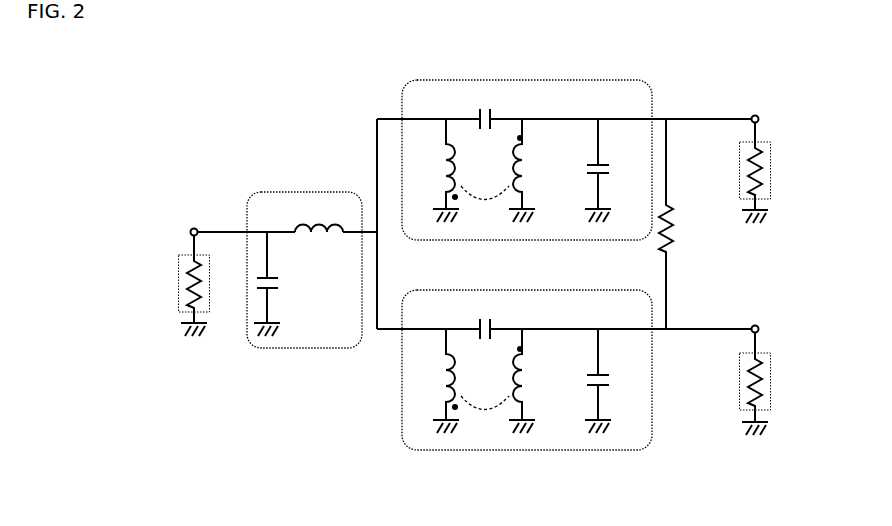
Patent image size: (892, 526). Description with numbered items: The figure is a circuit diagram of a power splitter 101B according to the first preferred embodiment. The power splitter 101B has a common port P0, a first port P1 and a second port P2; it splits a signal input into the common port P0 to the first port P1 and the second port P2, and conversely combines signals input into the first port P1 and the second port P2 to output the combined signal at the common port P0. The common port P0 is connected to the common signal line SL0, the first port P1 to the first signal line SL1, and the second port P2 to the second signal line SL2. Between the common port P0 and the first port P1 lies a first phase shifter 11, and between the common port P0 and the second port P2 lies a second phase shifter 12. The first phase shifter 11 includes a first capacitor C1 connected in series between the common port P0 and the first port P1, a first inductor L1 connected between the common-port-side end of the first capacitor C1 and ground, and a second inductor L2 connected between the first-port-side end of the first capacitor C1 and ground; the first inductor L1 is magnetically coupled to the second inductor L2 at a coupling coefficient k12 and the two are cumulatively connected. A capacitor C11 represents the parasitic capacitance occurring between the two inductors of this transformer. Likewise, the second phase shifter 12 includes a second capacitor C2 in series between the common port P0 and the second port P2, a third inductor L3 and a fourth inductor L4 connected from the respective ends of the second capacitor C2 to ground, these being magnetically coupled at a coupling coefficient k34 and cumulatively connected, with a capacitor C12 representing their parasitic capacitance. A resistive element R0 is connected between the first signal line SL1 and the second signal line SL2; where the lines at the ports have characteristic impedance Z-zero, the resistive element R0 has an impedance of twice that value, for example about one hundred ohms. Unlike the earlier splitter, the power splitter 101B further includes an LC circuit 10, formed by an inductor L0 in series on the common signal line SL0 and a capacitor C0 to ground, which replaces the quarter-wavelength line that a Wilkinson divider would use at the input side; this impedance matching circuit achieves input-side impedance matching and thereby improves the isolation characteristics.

The power splitter 101B is at (293, 50).
The LC circuit 10 is at (304, 246).
The first phase shifter 11 is at (527, 137).
The second phase shifter 12 is at (527, 395).
The common port P0 is at (163, 218).
The first port P1 is at (792, 105).
The second port P2 is at (792, 316).
The common signal line SL0 is at (371, 231).
The first signal line SL1 is at (392, 117).
The second signal line SL2 is at (395, 327).
The inductor L0 is at (319, 215).
The capacitor C0 is at (282, 284).
The first capacitor C1 is at (489, 107).
The second capacitor C2 is at (489, 317).
The first inductor L1 is at (438, 170).
The second inductor L2 is at (531, 170).
The third inductor L3 is at (438, 381).
The fourth inductor L4 is at (531, 381).
The coupling coefficient k12 is at (485, 206).
The coupling coefficient k34 is at (485, 415).
The capacitor C11 is at (615, 170).
The capacitor C12 is at (615, 381).
The resistive element R0 is at (682, 224).